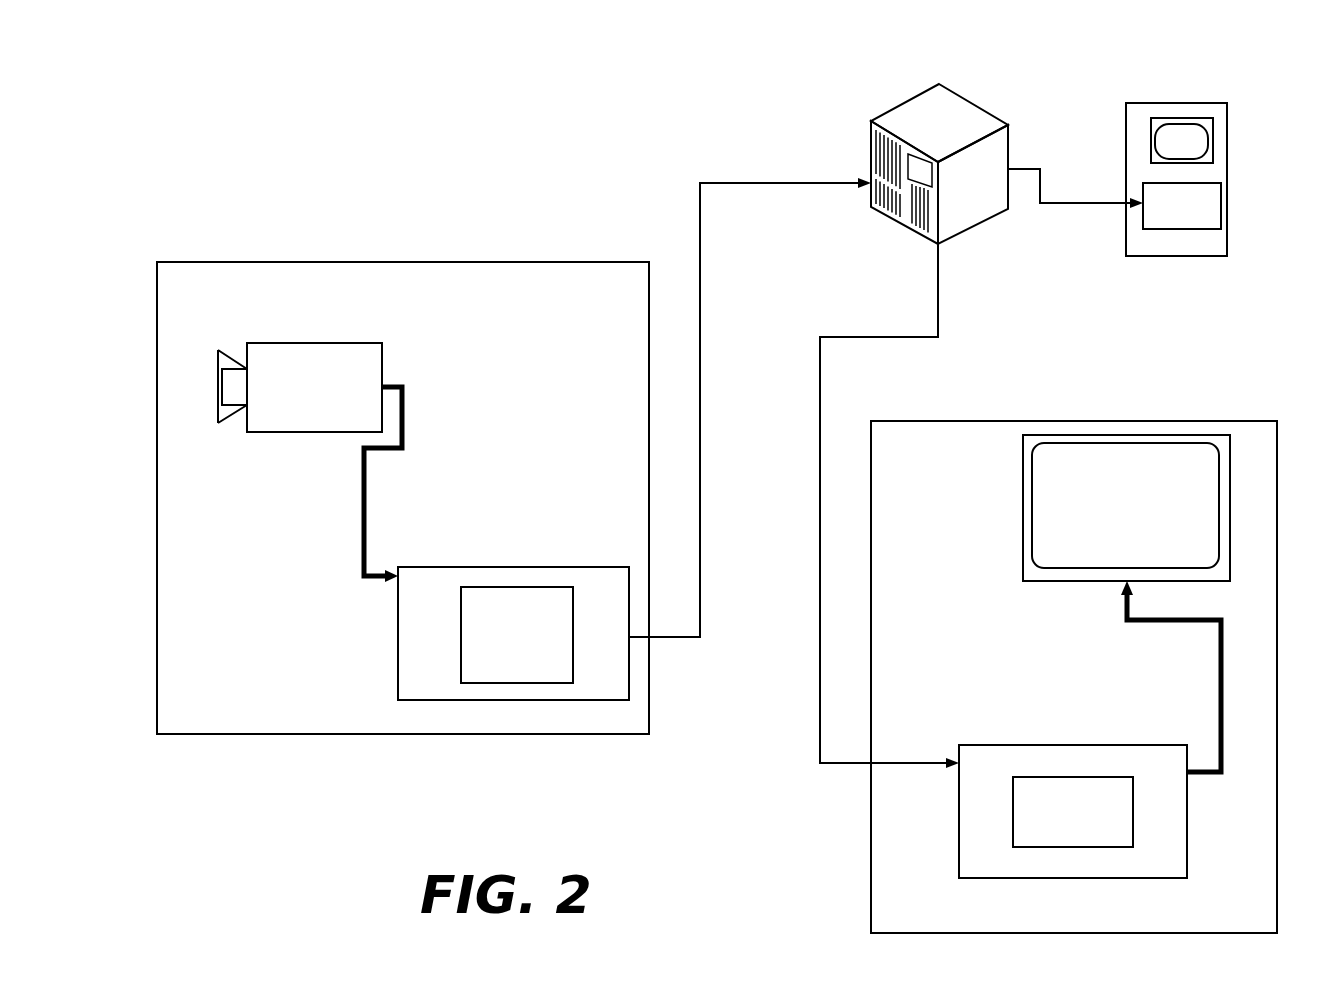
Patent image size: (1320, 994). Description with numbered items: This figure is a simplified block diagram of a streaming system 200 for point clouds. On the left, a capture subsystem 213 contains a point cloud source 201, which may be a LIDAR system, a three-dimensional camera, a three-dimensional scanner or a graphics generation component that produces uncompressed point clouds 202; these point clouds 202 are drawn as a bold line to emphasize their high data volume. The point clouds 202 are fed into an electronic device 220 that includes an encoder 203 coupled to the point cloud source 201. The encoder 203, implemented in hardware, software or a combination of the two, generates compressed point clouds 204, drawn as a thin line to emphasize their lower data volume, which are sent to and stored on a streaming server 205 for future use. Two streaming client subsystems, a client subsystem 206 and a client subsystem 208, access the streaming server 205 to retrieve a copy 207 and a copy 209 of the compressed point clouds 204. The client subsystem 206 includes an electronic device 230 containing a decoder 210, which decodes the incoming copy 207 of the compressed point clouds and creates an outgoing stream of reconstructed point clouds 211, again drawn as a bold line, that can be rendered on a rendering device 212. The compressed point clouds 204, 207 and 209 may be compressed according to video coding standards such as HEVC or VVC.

The streaming system 200 is at (1112, 53).
The point cloud source 201 is at (312, 343).
The point clouds 202 is at (363, 518).
The encoder 203 is at (502, 650).
The compressed point clouds 204 is at (700, 222).
The streaming server 205 is at (871, 144).
The client subsystem 206 is at (871, 906).
The copy of compressed point clouds 207 is at (820, 577).
The client subsystem 208 is at (1227, 158).
The copy of compressed point clouds 209 is at (1072, 207).
The decoder 210 is at (1058, 823).
The reconstructed point clouds 211 is at (1221, 685).
The rendering device 212 is at (1023, 509).
The capture subsystem 213 is at (300, 735).
The electronic device 220 is at (515, 567).
The electronic device 230 is at (959, 848).